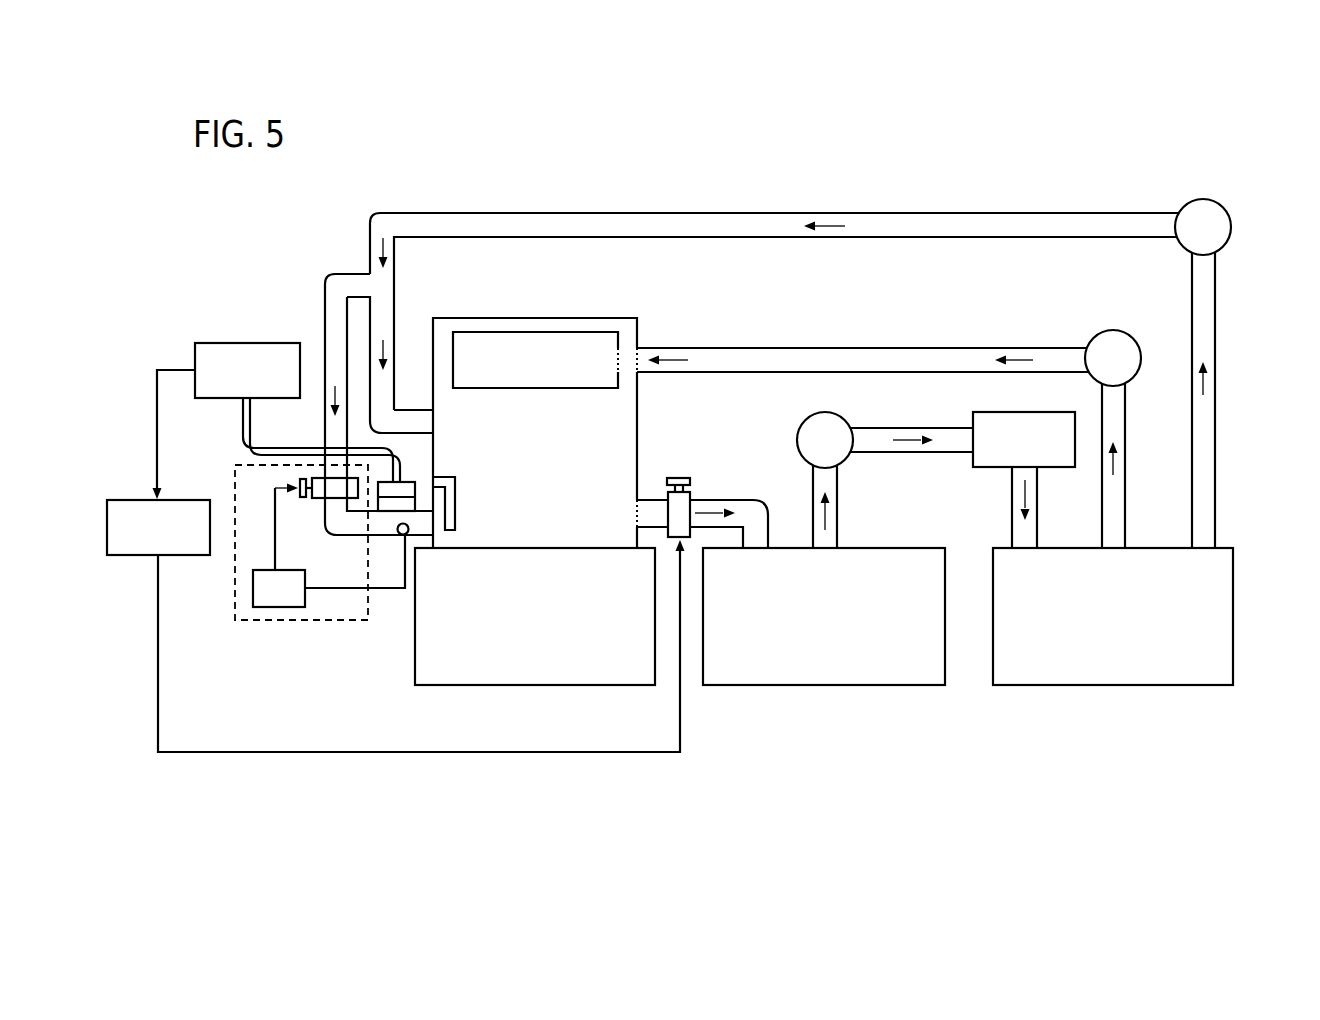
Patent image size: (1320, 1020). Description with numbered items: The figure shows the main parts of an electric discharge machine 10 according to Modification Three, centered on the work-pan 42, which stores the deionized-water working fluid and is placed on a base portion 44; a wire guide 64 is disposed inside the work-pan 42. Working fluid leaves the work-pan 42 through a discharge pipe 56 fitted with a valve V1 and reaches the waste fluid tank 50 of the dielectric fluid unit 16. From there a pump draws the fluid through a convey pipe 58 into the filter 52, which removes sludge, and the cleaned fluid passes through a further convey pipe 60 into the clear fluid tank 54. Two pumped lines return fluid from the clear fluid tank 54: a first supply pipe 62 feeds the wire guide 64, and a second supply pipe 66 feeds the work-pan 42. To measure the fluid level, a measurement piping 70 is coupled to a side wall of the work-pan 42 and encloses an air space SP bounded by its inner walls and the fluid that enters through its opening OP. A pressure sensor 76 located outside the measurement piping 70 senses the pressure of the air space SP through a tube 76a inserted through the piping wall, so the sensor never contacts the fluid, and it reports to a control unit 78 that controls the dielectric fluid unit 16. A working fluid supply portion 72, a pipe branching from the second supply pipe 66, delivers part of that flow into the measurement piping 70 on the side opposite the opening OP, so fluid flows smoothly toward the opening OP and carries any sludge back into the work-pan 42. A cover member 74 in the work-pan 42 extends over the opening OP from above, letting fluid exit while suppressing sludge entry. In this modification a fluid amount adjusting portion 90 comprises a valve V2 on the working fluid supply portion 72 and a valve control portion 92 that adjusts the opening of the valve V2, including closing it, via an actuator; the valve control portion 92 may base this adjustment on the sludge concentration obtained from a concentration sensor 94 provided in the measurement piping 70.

The electric discharge machine 10 is at (484, 176).
The dielectric fluid unit 16 is at (967, 466).
The work-pan 42 is at (639, 405).
The base portion 44 is at (537, 686).
The waste fluid tank 50 is at (825, 687).
The filter 52 is at (990, 468).
The clear fluid tank 54 is at (1113, 687).
The discharge pipe 56 is at (720, 500).
The convey pipe 58 is at (917, 453).
The convey pipe 60 is at (1040, 487).
The first supply pipe 62 is at (1045, 348).
The wire guide 64 is at (620, 338).
The second supply pipe 66 is at (1133, 213).
The measurement piping 70 is at (388, 528).
The working fluid supply portion 72 is at (326, 280).
The cover member 74 is at (452, 476).
The pressure sensor 76 is at (236, 342).
The tube 76a is at (242, 420).
The control unit 78 is at (188, 558).
The fluid amount adjusting portion 90 is at (327, 622).
The valve control portion 92 is at (277, 608).
The concentration sensor 94 is at (399, 536).
The valve V1 is at (685, 476).
The valve V2 is at (318, 494).
The air space SP is at (404, 492).
The opening OP is at (413, 540).